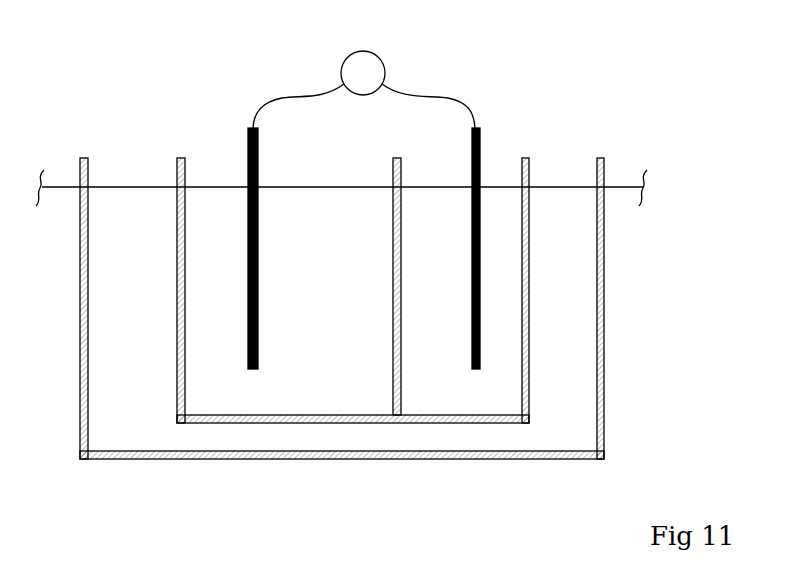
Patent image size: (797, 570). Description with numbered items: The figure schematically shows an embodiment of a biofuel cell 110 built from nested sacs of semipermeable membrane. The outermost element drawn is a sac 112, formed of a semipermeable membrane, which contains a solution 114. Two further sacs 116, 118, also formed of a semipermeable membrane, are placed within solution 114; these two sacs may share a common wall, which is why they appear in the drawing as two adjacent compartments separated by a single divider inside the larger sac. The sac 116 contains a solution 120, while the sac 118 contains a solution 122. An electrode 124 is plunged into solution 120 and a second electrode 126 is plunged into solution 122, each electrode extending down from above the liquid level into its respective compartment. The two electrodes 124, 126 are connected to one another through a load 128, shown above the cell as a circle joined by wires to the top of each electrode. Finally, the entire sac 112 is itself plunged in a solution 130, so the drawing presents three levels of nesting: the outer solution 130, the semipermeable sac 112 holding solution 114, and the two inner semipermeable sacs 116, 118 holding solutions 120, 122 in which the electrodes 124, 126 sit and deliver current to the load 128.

The biofuel cell 110 is at (597, 58).
The sac 112 is at (604, 279).
The solution 114 is at (566, 339).
The sac 116 is at (177, 207).
The sac 118 is at (530, 247).
The solution 120 is at (215, 197).
The solution 122 is at (451, 197).
The electrode 124 is at (252, 129).
The electrode 126 is at (482, 132).
The load 128 is at (385, 63).
The solution 130 is at (630, 400).